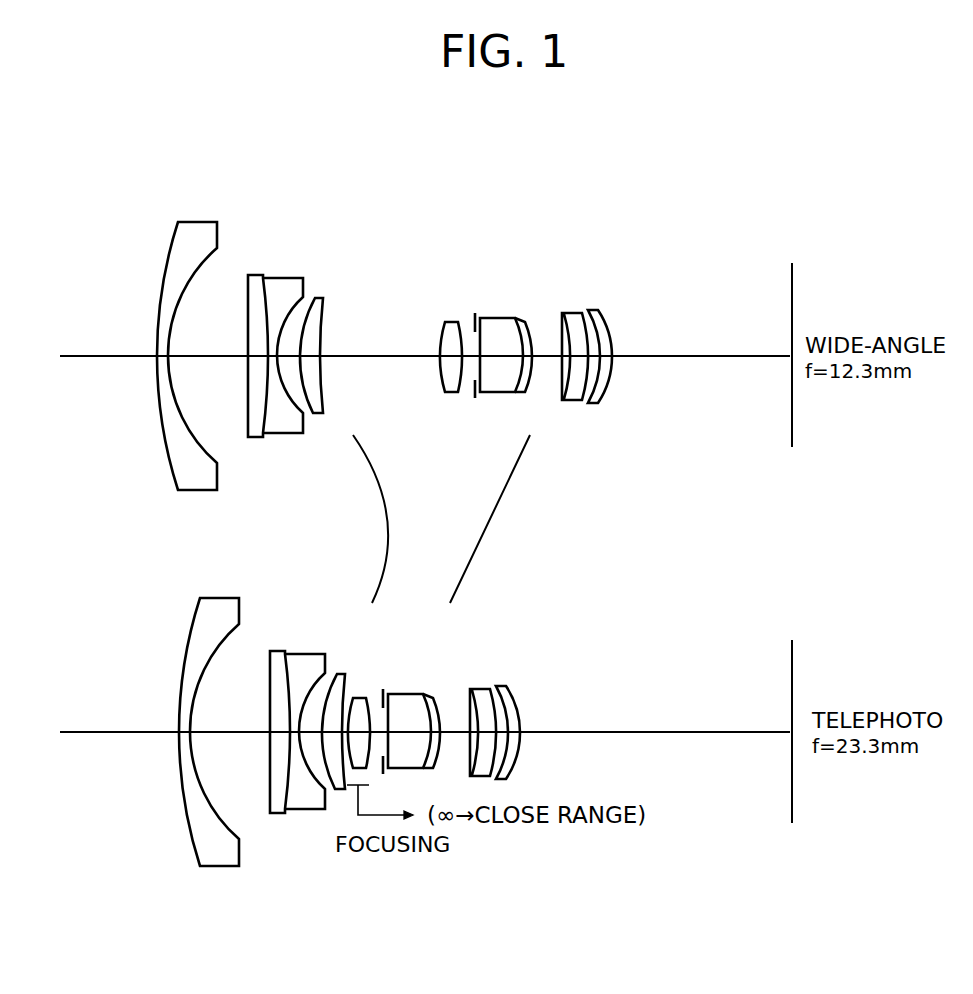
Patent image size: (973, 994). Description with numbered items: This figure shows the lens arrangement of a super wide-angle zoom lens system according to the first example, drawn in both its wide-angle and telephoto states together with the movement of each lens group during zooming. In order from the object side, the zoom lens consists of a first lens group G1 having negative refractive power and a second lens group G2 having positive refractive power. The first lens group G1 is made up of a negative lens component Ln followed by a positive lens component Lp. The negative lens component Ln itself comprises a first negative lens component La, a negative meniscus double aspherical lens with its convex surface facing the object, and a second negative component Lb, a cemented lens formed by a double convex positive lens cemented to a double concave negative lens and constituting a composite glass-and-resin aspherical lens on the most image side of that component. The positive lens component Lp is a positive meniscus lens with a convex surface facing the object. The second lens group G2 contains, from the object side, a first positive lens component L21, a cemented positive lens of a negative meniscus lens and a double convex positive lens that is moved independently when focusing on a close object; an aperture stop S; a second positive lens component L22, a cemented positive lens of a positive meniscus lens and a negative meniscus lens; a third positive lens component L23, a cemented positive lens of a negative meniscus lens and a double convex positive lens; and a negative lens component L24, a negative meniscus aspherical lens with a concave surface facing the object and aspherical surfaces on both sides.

The first lens group G1 is at (347, 132).
The negative lens component Ln is at (141, 170).
The positive lens component Lp is at (312, 170).
The first negative lens component La is at (227, 215).
The second negative component Lb is at (240, 215).
The second lens group G2 is at (413, 218).
The aperture stop S is at (475, 320).
The first positive lens component L21 is at (425, 302).
The second positive lens component L22 is at (480, 302).
The third positive lens component L23 is at (555, 302).
The negative lens component L24 is at (588, 302).